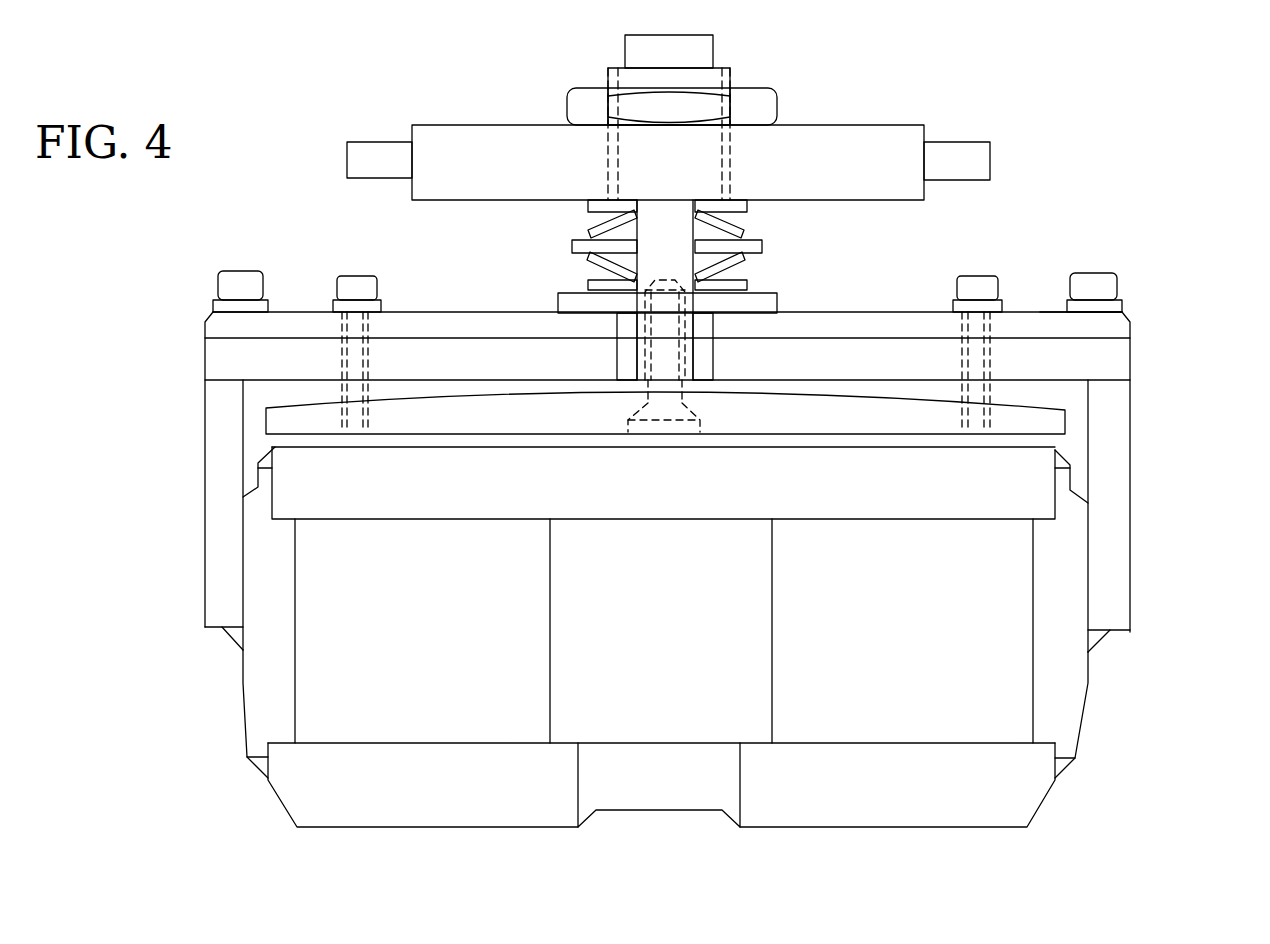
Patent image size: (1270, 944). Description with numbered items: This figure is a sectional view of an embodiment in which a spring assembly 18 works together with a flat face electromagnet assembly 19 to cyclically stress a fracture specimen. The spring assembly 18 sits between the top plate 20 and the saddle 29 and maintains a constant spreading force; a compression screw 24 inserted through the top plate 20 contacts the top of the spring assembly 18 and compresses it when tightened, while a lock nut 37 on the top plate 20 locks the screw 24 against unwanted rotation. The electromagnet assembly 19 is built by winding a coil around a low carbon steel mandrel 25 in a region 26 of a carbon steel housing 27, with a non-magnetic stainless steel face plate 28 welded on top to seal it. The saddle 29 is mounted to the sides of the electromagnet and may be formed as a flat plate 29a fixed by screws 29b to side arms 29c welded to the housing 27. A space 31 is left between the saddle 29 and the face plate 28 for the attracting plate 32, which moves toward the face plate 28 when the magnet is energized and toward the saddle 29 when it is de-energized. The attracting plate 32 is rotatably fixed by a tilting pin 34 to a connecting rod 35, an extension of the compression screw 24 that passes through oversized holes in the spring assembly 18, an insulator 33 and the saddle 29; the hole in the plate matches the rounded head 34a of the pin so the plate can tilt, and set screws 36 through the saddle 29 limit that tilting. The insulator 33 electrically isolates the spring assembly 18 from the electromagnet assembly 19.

The spring assembly 18 is at (785, 240).
The electromagnet assembly 19 is at (1152, 548).
The top plate 20 is at (918, 130).
The compression screw 24 is at (725, 67).
The mandrel 25 is at (740, 827).
The region 26 is at (965, 720).
The housing 27 is at (1067, 698).
The face plate 28 is at (1033, 482).
The saddle 29 is at (196, 312).
The flat plate 29a is at (1040, 312).
The screws 29b is at (225, 273).
The side arms 29c is at (205, 487).
The space 31 is at (288, 441).
The attracting plate 32 is at (283, 422).
The insulator 33 is at (780, 298).
The tilting pin 34 is at (668, 360).
The head 34a is at (645, 410).
The connecting rod 35 is at (655, 238).
The set screws 36 is at (353, 277).
The lock nut 37 is at (780, 100).